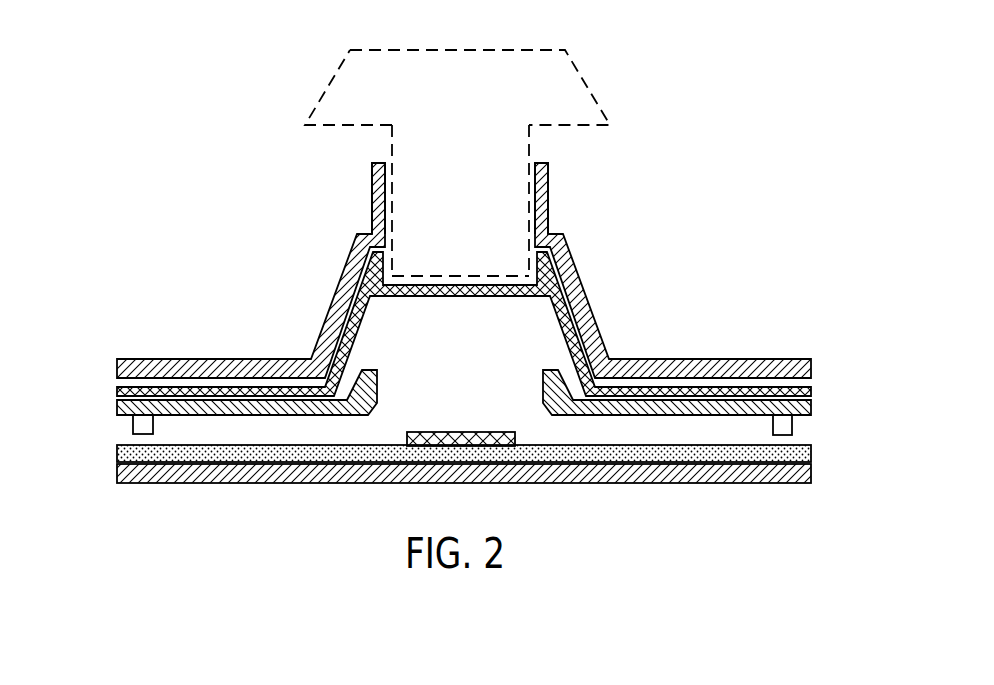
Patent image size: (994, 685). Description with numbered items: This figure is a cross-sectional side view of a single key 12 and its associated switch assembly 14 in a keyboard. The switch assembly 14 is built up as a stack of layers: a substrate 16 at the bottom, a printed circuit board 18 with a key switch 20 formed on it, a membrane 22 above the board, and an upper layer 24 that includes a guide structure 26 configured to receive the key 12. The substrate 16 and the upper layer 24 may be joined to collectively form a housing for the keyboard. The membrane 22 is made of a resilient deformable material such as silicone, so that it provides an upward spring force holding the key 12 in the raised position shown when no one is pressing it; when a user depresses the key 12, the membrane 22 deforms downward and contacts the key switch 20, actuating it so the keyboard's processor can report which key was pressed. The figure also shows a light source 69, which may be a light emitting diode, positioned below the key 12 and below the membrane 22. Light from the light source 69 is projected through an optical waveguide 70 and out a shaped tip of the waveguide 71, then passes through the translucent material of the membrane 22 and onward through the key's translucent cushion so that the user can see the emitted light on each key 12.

The key 12 is at (577, 56).
The switch assembly 14 is at (680, 289).
The substrate 16 is at (812, 455).
The printed circuit board 18 is at (812, 473).
The key switch 20 is at (488, 432).
The membrane 22 is at (812, 391).
The upper layer 24 is at (812, 369).
The guide structure 26 is at (548, 205).
The light source 69 is at (133, 424).
The optical waveguide 70 is at (812, 408).
The shaped tip of the waveguide 71 is at (371, 373).